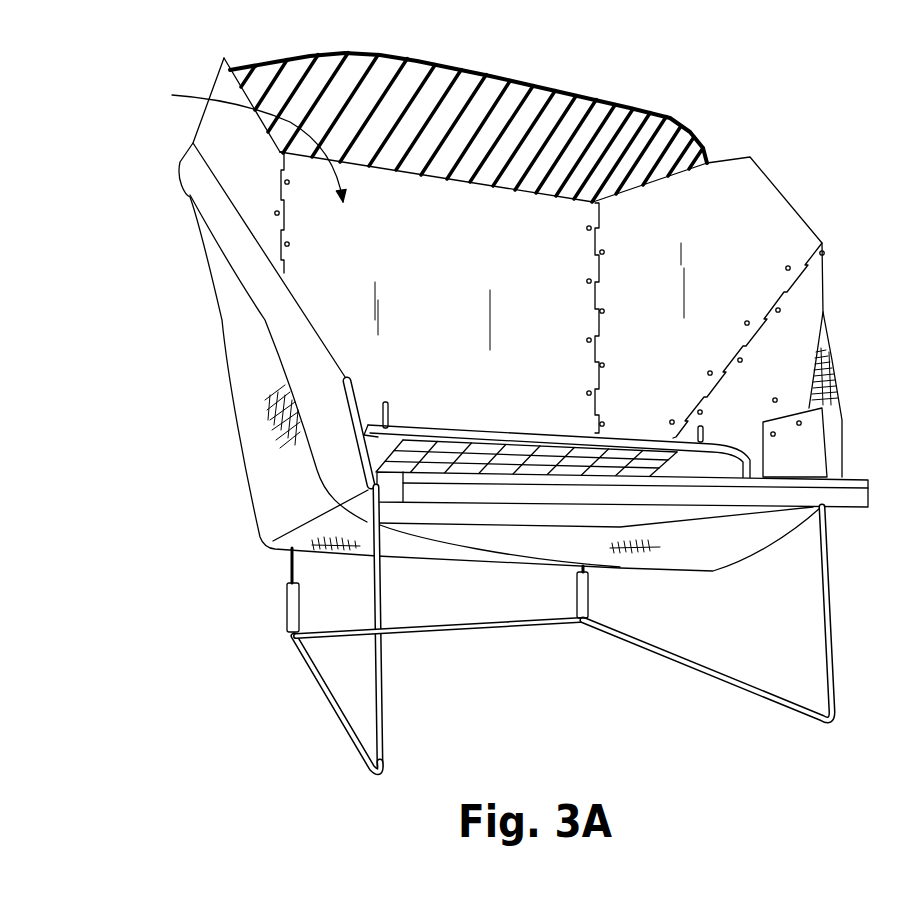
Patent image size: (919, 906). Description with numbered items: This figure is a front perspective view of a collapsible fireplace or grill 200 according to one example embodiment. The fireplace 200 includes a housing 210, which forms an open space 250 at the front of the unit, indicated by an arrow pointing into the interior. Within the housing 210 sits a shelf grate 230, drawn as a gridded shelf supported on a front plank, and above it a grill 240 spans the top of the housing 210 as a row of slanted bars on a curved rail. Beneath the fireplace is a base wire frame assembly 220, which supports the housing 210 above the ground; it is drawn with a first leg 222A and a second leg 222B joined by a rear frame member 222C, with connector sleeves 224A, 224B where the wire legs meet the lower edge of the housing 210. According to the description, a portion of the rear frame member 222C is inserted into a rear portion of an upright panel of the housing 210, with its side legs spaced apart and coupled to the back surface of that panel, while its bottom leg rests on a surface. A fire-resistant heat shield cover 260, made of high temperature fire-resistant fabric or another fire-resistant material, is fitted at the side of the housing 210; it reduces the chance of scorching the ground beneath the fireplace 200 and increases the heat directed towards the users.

The collapsible fireplace or grill 200 is at (60, 133).
The housing 210 is at (793, 200).
The base wire frame assembly 220 is at (325, 693).
The first leg 222A is at (353, 743).
The second leg 222B is at (757, 697).
The rear frame member 222C is at (498, 632).
The first leg connector sleeve 224A is at (290, 603).
The second leg connector sleeve 224B is at (585, 597).
The shelf grate 230 is at (537, 430).
The grill 240 is at (672, 118).
The open space 250 is at (242, 143).
The fire-resistant heat shield cover 260 is at (837, 343).